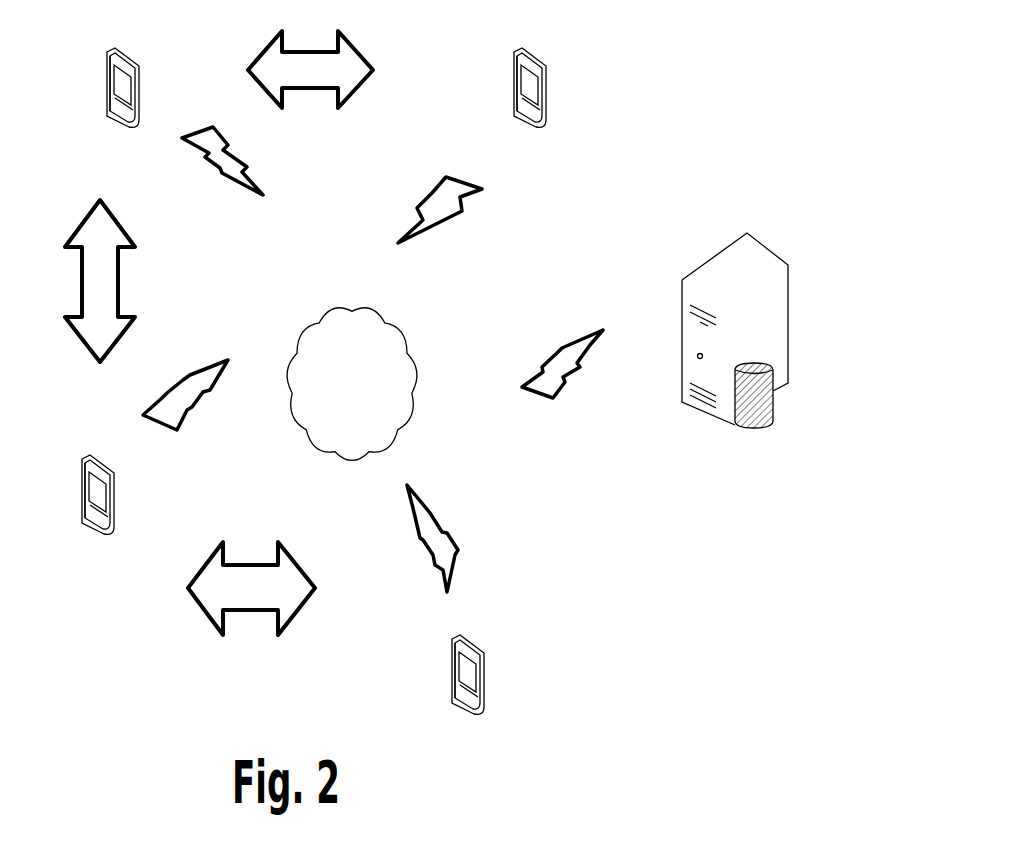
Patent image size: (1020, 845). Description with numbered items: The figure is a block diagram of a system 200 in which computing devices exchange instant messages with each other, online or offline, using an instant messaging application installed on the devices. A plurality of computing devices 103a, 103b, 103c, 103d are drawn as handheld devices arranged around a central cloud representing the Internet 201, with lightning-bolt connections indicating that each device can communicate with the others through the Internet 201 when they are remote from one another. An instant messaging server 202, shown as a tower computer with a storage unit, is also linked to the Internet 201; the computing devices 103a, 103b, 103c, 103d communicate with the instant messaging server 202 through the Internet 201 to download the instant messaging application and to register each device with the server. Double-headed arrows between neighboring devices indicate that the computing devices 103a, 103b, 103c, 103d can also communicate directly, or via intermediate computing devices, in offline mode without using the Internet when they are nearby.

The computing device 103a is at (107, 56).
The computing device 103b is at (83, 462).
The computing device 103c is at (453, 700).
The computing device 103d is at (515, 54).
The system 200 is at (600, 190).
The internet 201 is at (342, 325).
The instant messaging server 202 is at (812, 325).